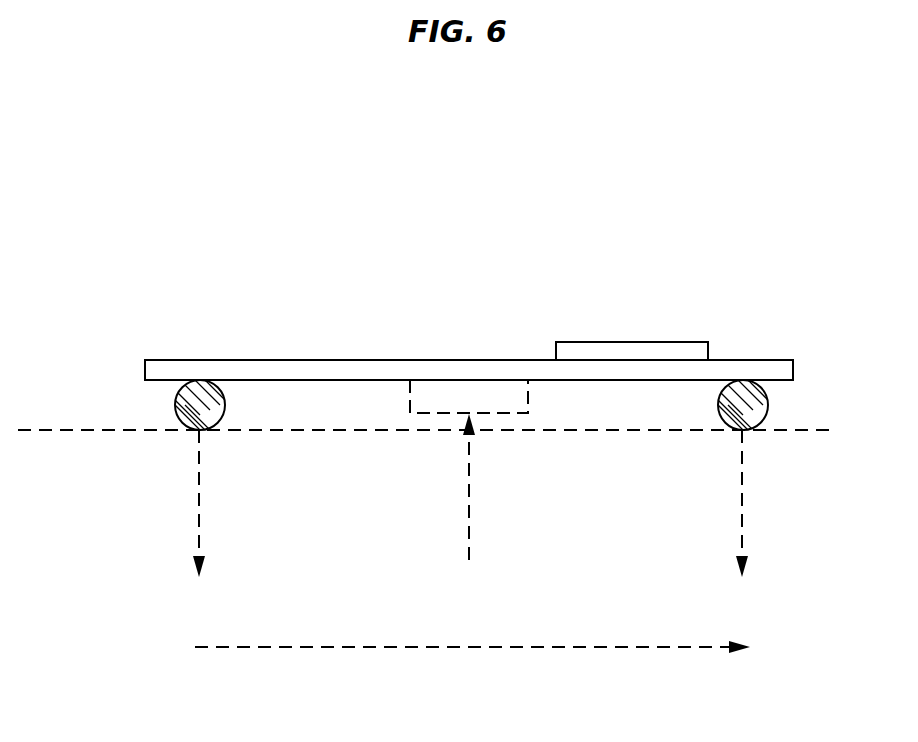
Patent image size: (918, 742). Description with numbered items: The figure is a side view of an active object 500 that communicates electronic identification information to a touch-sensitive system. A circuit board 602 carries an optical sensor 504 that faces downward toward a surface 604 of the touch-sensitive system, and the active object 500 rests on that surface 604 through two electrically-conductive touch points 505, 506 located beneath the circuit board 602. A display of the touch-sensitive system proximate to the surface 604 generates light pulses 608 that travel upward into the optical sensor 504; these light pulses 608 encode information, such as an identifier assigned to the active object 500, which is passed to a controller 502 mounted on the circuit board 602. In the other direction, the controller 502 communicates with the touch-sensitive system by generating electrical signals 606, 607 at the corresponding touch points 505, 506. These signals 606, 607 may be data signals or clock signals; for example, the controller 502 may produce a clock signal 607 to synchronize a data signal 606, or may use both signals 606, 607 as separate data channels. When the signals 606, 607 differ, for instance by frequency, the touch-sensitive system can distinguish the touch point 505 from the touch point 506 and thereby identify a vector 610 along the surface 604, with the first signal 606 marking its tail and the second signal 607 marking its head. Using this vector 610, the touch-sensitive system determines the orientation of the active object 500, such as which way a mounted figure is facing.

The active object 500 is at (640, 153).
The controller 502 is at (668, 342).
The optical sensor 504 is at (445, 388).
The touch point 505 is at (178, 398).
The touch point 506 is at (765, 403).
The circuit board 602 is at (748, 360).
The surface 604 is at (75, 432).
The electrical signal 606 is at (199, 508).
The electrical signal 607 is at (742, 510).
The light pulses 608 is at (469, 485).
The vector 610 is at (477, 648).